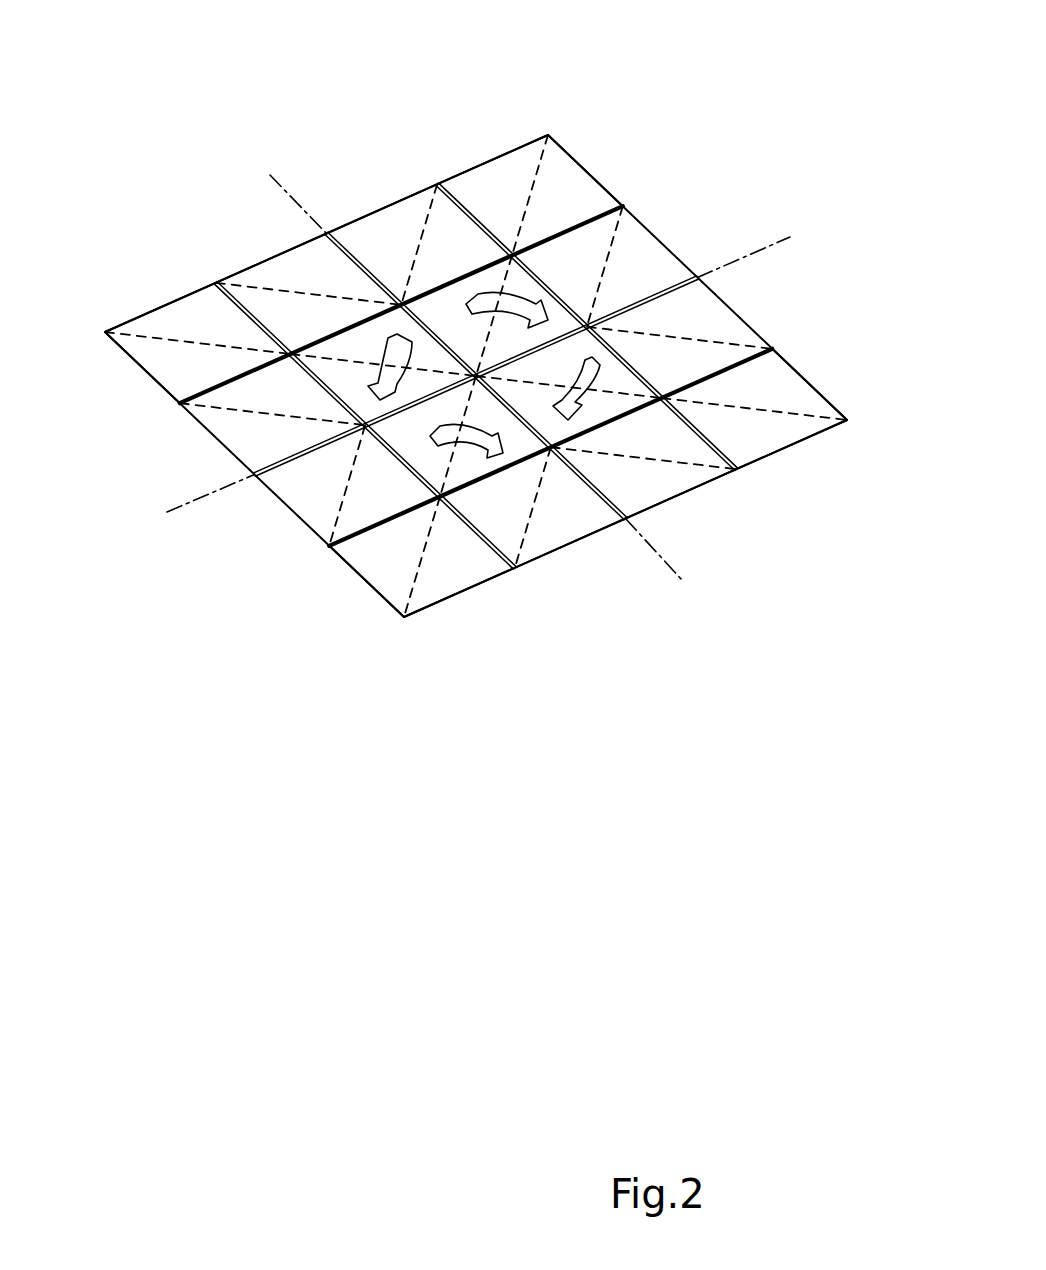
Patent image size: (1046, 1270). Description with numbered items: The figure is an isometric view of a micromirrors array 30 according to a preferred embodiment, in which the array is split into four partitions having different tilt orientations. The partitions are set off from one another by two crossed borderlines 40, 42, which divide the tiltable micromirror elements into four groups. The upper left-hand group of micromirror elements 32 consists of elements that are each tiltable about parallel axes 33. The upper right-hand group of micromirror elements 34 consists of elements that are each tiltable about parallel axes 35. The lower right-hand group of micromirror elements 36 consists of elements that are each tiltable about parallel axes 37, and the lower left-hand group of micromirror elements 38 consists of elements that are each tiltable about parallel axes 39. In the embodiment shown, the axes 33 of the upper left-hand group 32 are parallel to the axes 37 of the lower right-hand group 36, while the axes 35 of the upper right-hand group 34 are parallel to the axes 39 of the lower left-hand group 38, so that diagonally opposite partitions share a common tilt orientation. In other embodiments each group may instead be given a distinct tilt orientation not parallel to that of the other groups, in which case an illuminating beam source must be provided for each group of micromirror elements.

The micromirrors array 30 is at (592, 92).
The upper left-hand group of micromirror elements 32 is at (168, 326).
The parallel axes 33 is at (290, 287).
The upper right-hand group of micromirror elements 34 is at (518, 168).
The parallel axes 35 is at (423, 230).
The lower right-hand group of micromirror elements 36 is at (787, 397).
The parallel axes 37 is at (667, 465).
The lower left-hand group of micromirror elements 38 is at (437, 583).
The parallel axes 39 is at (527, 533).
The borderline 40 is at (167, 512).
The borderline 42 is at (270, 176).